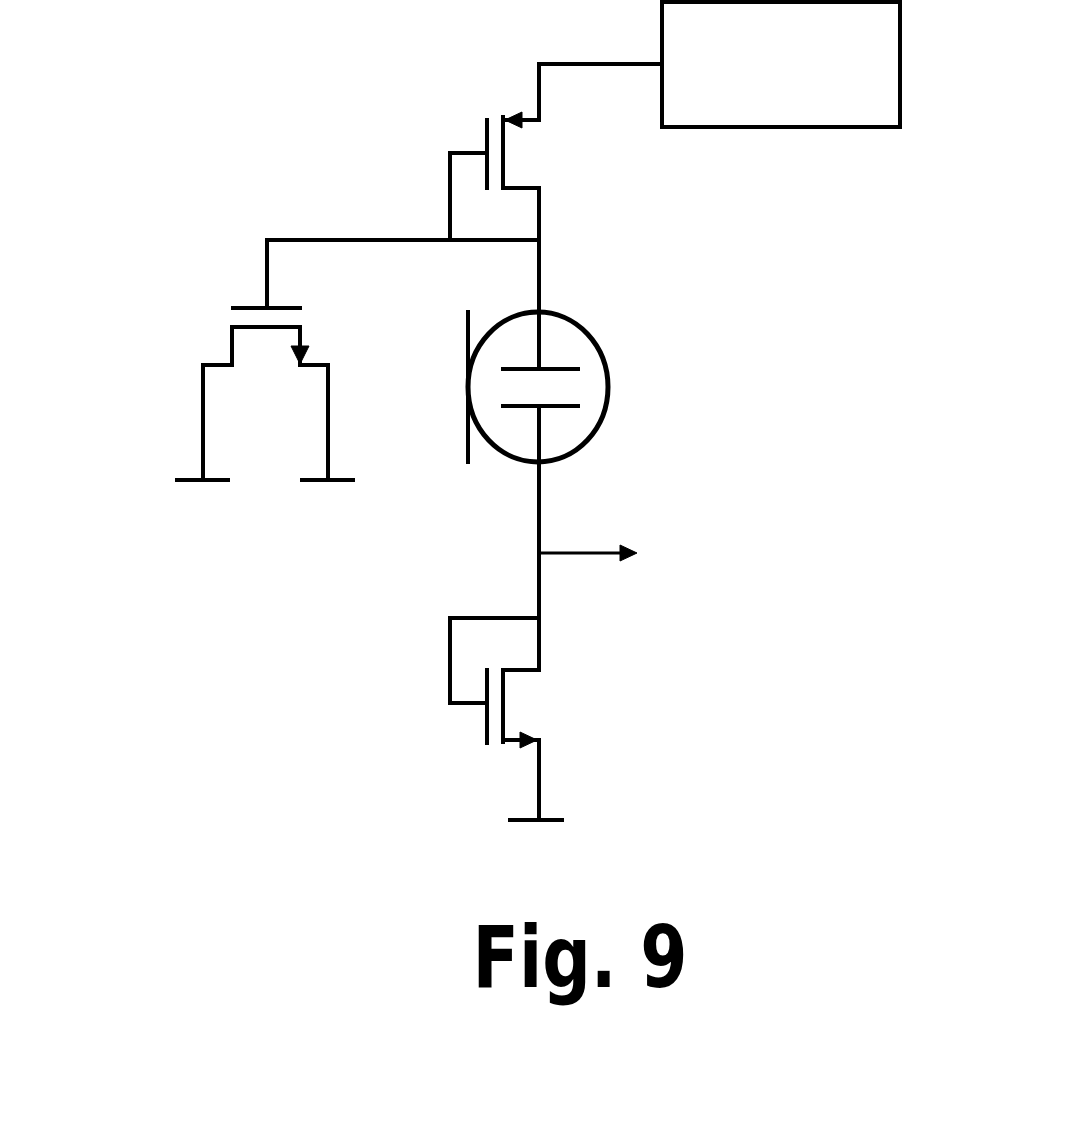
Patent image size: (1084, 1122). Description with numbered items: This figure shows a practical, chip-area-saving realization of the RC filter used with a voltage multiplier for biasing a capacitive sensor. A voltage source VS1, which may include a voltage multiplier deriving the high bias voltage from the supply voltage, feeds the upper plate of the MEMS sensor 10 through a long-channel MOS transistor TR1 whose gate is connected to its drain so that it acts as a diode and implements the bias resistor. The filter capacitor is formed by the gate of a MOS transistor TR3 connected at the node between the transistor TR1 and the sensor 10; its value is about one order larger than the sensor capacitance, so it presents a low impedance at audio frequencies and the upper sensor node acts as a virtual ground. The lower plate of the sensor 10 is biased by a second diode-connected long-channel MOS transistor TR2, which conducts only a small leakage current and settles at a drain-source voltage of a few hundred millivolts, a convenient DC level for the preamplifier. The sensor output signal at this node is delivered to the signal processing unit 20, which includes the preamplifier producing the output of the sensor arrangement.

The long-channel MOS transistor TR1 is at (487, 140).
The long-channel MOS transistor TR2 is at (487, 717).
The MOS transistor TR3 is at (243, 305).
The voltage source VS1 is at (781, 64).
The MEMS sensor 10 is at (570, 390).
The signal processing unit 20 is at (628, 555).